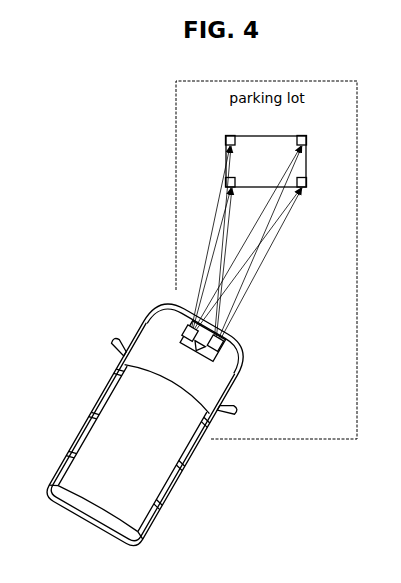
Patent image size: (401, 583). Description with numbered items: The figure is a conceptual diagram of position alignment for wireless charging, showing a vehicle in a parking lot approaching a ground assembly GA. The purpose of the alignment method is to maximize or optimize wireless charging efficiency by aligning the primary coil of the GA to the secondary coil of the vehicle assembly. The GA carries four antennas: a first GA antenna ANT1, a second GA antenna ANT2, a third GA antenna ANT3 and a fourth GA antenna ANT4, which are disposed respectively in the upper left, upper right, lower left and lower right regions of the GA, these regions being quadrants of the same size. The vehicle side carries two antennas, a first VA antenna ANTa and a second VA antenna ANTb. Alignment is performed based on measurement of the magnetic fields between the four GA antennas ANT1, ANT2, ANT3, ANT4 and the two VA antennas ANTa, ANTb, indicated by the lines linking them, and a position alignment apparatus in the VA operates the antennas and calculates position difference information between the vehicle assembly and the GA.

The element GA is at (266, 161).
The first GA antenna ANT1 is at (208, 142).
The second GA antenna ANT2 is at (323, 142).
The third GA antenna ANT3 is at (208, 183).
The fourth GA antenna ANT4 is at (323, 183).
The first VA antenna ANTa is at (177, 325).
The second VA antenna ANTb is at (228, 351).